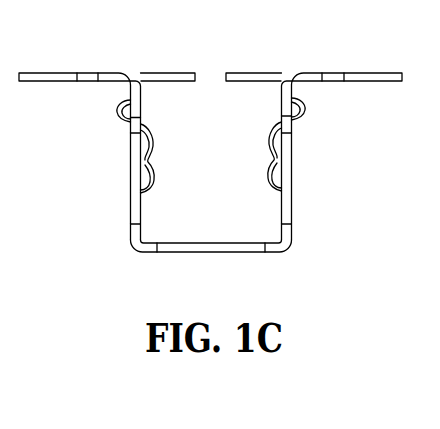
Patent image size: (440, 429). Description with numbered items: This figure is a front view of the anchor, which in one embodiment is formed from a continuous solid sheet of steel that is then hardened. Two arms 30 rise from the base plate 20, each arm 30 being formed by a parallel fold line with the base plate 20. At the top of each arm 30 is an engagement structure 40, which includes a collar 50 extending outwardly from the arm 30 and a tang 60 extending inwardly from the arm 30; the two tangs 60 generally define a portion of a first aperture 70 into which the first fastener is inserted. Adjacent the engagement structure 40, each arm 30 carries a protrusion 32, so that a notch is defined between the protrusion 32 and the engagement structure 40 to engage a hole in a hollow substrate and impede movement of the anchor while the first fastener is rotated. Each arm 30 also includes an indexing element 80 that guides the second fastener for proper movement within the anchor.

The base plate 20 is at (202, 248).
The arm 30 is at (128, 165).
The protrusion 32 is at (121, 109).
The engagement structure 40 is at (210, 59).
The collar 50 is at (55, 73).
The tang 60 is at (180, 72).
The first aperture 70 is at (211, 80).
The indexing element 80 is at (152, 184).